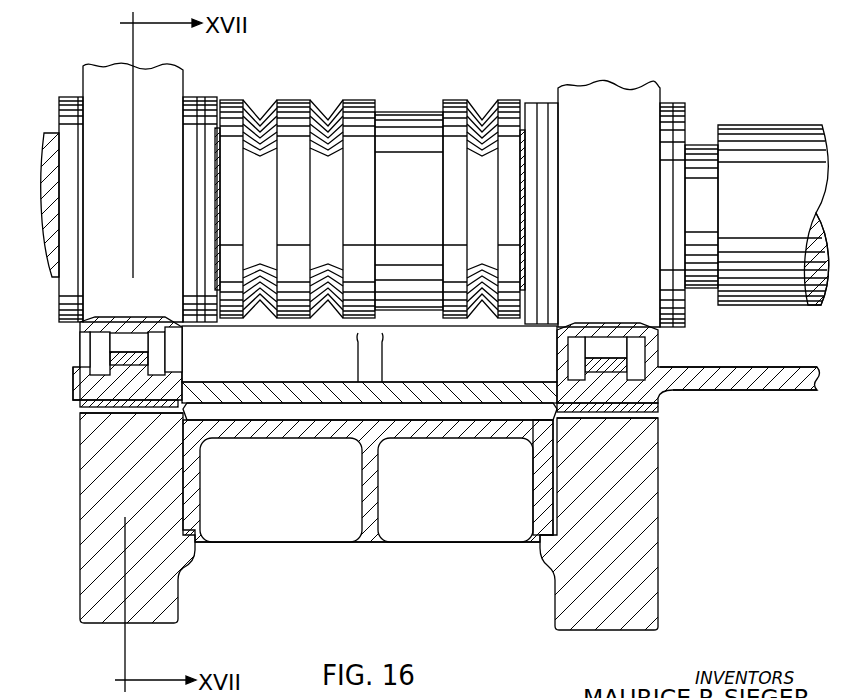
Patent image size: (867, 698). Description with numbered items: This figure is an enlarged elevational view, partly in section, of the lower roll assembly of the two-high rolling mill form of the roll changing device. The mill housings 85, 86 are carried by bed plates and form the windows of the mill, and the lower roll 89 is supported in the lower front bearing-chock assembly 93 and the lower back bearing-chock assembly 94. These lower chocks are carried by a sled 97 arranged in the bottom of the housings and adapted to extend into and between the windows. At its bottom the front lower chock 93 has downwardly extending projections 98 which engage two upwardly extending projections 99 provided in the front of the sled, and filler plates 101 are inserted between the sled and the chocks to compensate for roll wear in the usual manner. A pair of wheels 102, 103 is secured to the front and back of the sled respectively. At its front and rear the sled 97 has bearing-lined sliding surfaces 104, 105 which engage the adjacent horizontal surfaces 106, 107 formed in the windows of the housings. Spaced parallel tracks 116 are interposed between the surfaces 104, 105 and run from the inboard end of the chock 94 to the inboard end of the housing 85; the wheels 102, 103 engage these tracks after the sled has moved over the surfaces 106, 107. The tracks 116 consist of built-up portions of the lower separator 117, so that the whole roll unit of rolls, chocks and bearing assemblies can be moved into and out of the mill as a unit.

The mill housing 85 is at (140, 511).
The mill housing 86 is at (617, 522).
The lower roll 89 is at (424, 204).
The lower front bearing-chock assembly 93 is at (118, 322).
The lower back bearing-chock assembly 94 is at (658, 330).
The sled 97 is at (442, 366).
The downwardly extending projections 98 is at (90, 358).
The upwardly extending projections 99 is at (104, 334).
The filler plates 101 is at (150, 360).
The wheel 102 is at (84, 393).
The wheel 103 is at (655, 390).
The bearing-lined sliding surface 104 is at (83, 404).
The bearing-lined sliding surface 105 is at (660, 411).
The horizontal surface 106 is at (140, 414).
The horizontal surface 107 is at (637, 418).
The tracks 116 is at (273, 415).
The lower separator 117 is at (432, 430).